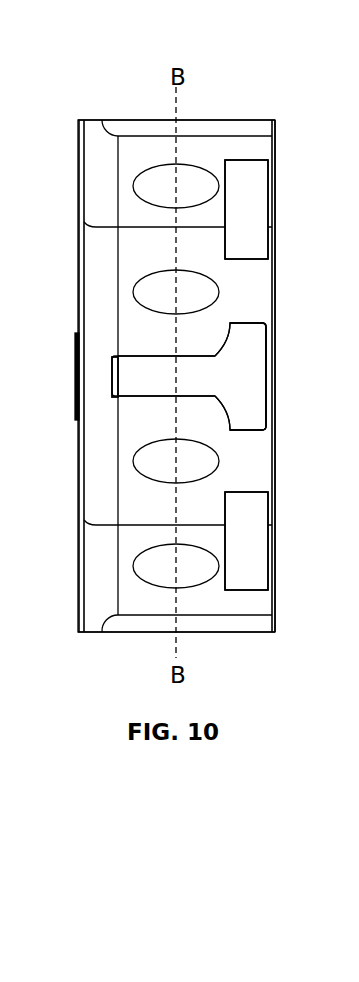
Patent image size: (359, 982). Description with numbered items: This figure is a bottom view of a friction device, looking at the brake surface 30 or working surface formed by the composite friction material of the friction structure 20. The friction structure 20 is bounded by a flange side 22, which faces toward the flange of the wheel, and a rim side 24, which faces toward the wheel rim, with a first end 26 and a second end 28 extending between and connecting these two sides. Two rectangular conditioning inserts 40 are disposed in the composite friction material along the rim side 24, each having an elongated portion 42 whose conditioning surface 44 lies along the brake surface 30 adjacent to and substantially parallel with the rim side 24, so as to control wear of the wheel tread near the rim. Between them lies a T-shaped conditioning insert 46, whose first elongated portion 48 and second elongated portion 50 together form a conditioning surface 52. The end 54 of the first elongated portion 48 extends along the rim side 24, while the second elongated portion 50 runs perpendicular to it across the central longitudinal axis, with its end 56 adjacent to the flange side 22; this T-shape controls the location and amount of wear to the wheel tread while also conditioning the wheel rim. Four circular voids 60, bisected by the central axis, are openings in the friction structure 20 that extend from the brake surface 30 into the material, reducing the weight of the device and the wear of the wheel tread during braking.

The friction structure 20 is at (132, 600).
The flange side 22 is at (79, 503).
The rim side 24 is at (275, 170).
The first end 26 is at (243, 120).
The second end 28 is at (243, 633).
The brake surface 30 is at (257, 605).
The conditioning insert 40 is at (245, 205).
The elongated portion 42 is at (245, 222).
The conditioning surface 44 is at (245, 243).
The T-shaped conditioning insert 46 is at (245, 342).
The first elongated portion 48 is at (245, 376).
The second elongated portion 50 is at (127, 381).
The conditioning surface 52 is at (190, 383).
The end of first elongated portion 54 is at (266, 415).
The end of second elongated portion 56 is at (112, 368).
The voids 60 is at (138, 187).